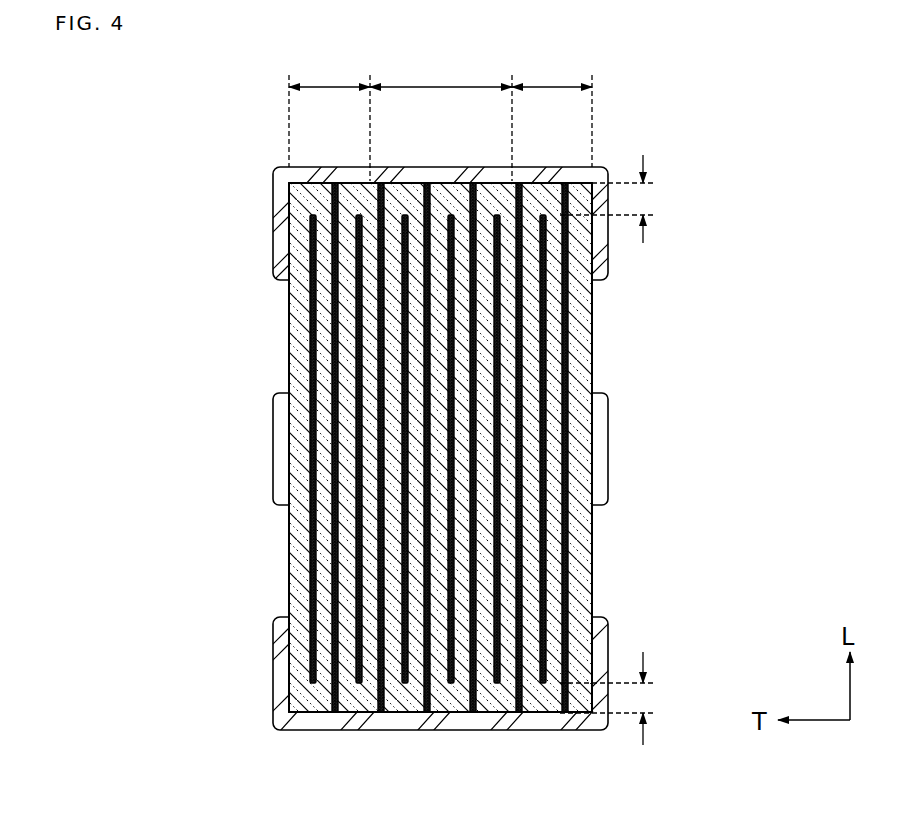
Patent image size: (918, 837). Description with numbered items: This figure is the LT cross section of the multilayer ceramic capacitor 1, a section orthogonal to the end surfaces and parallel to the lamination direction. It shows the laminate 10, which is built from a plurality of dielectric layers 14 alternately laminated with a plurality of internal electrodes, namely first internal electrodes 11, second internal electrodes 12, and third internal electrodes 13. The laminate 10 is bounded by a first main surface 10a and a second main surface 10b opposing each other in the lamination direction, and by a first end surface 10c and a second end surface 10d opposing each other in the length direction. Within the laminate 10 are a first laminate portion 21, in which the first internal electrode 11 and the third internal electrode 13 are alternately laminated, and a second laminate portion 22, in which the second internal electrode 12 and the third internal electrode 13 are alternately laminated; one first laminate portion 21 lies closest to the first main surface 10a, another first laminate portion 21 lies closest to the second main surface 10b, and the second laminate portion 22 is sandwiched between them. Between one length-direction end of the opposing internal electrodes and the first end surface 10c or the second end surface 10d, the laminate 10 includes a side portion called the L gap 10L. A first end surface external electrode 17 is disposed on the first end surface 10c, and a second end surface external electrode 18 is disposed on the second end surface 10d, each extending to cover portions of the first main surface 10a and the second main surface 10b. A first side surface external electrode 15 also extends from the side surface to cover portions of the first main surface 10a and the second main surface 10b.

The multilayer ceramic capacitor 1 is at (236, 190).
The laminate 10 is at (444, 452).
The first main surface 10a is at (600, 577).
The second main surface 10b is at (289, 580).
The first end surface 10c is at (332, 713).
The second end surface 10d is at (348, 182).
The L gap 10L is at (632, 450).
The first internal electrode 11 is at (313, 358).
The second internal electrode 12 is at (497, 342).
The third internal electrode 13 is at (337, 280).
The dielectric layer 14 is at (307, 561).
The first side surface external electrode 15 is at (278, 462).
The first end surface external electrode 17 is at (544, 731).
The second end surface external electrode 18 is at (544, 168).
The first laminate portion 21 is at (440, 115).
The second laminate portion 22 is at (441, 68).